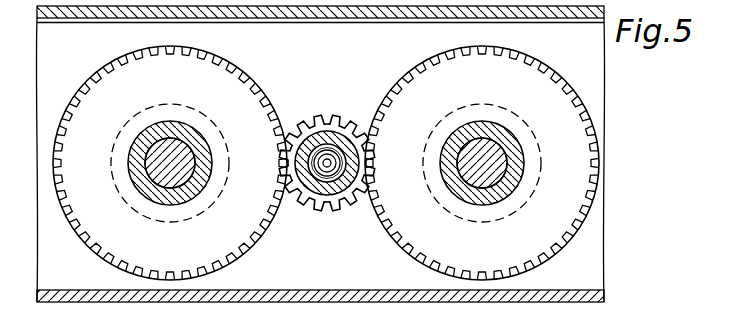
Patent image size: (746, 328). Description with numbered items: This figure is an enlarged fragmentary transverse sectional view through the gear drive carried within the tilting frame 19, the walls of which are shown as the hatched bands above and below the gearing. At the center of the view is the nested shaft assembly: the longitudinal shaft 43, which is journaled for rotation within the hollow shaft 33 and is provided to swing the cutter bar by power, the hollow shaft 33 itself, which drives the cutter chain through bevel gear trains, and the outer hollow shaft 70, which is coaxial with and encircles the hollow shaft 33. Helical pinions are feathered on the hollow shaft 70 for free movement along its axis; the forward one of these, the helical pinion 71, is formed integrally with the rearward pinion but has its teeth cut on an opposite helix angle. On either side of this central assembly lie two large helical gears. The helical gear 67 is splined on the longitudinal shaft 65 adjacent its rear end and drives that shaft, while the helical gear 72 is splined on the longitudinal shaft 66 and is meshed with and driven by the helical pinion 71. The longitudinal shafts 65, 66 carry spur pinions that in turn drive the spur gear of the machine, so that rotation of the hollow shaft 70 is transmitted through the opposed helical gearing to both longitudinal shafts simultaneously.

The tilting frame 19 is at (280, 301).
The helical gear 72 is at (100, 249).
The longitudinal shaft 66 is at (187, 148).
The helical gear 67 is at (553, 243).
The longitudinal shaft 65 is at (492, 148).
The hollow shaft 70 is at (331, 148).
The hollow shaft 33 is at (322, 150).
The helical pinion 71 is at (323, 202).
The longitudinal shaft 43 is at (334, 203).